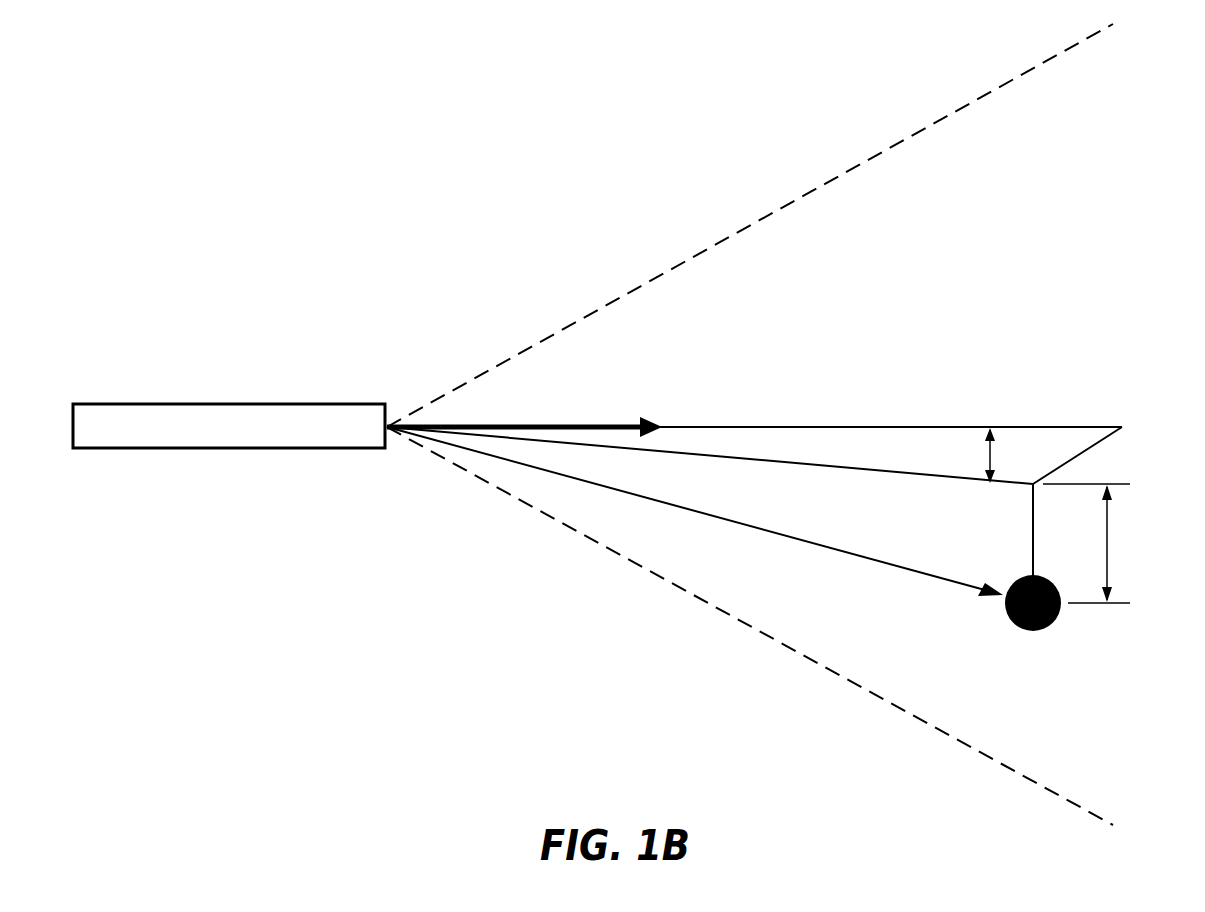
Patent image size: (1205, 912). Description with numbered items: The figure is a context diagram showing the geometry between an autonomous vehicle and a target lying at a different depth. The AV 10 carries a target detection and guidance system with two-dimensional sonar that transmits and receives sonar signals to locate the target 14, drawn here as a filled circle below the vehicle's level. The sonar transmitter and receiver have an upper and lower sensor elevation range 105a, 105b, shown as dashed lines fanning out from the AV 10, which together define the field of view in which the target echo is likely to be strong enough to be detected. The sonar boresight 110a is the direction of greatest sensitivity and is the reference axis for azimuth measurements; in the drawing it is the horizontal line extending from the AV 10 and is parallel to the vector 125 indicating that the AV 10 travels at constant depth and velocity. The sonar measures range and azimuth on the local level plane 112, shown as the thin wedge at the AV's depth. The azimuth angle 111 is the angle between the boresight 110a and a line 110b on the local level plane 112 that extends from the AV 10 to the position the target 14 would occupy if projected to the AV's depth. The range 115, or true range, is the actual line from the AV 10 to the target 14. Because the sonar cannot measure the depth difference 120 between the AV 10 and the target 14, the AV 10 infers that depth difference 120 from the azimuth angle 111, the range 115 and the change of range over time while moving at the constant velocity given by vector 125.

The AV 10 is at (195, 404).
The target 14 is at (1036, 630).
The upper sensor elevation range 105a is at (857, 162).
The lower sensor elevation range 105b is at (857, 685).
The boresight 110a is at (862, 425).
The line on the local level plane 110b is at (866, 470).
The azimuth angle 111 is at (962, 455).
The local level plane 112 is at (1050, 442).
The range 115 is at (778, 534).
The depth difference 120 is at (1108, 543).
The vector 125 is at (610, 424).